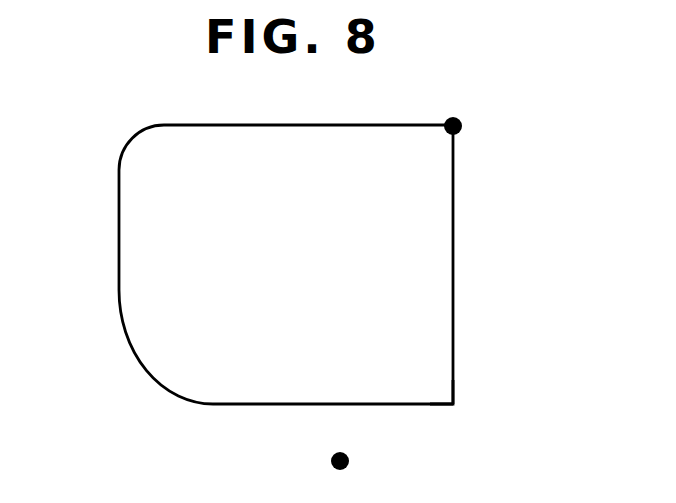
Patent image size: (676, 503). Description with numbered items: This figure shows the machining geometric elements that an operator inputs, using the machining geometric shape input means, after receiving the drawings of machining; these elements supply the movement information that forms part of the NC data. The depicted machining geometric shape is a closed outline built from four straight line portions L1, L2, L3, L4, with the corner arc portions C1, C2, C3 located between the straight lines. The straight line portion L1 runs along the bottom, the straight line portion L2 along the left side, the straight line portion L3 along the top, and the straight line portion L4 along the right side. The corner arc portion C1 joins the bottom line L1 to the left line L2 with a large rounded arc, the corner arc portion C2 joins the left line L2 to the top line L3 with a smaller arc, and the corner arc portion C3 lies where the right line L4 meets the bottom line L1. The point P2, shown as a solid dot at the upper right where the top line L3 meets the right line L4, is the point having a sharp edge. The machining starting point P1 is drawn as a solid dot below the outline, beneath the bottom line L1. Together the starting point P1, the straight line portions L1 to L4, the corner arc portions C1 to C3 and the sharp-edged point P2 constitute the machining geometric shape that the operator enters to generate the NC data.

The straight line portion L1 is at (285, 405).
The straight line portion L2 is at (119, 252).
The straight line portion L3 is at (328, 125).
The straight line portion L4 is at (453, 265).
The corner arc portion C1 is at (142, 362).
The corner arc portion C2 is at (138, 140).
The corner arc portion C3 is at (455, 404).
The machining starting point P1 is at (349, 462).
The point having a sharp edge P2 is at (462, 124).